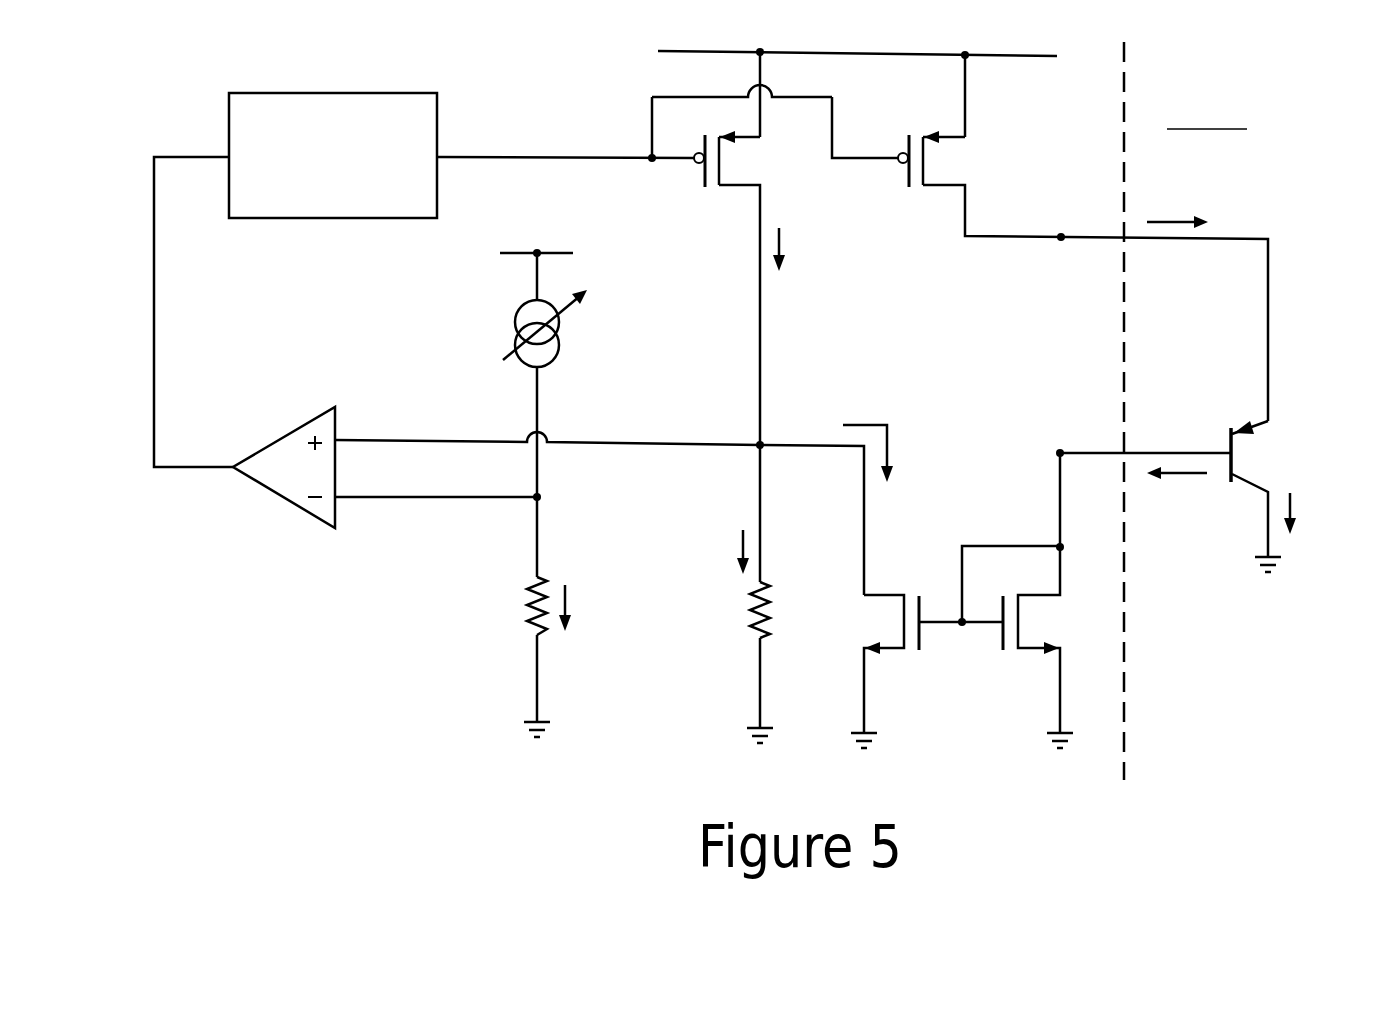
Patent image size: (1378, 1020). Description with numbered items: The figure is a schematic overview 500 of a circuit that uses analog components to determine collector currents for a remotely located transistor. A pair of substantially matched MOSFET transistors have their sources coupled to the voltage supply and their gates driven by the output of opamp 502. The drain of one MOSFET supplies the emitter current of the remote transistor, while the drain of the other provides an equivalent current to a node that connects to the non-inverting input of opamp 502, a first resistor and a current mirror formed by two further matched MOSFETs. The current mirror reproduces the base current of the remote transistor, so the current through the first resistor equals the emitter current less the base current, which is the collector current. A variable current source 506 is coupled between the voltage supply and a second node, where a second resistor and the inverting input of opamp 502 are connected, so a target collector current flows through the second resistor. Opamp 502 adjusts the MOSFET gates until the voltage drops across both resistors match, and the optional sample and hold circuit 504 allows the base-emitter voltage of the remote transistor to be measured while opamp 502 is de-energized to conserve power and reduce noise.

The overview 500 is at (1242, 52).
The opamp 502 is at (283, 498).
The optional sample and hold circuit 504 is at (317, 93).
The variable current source 506 is at (527, 300).